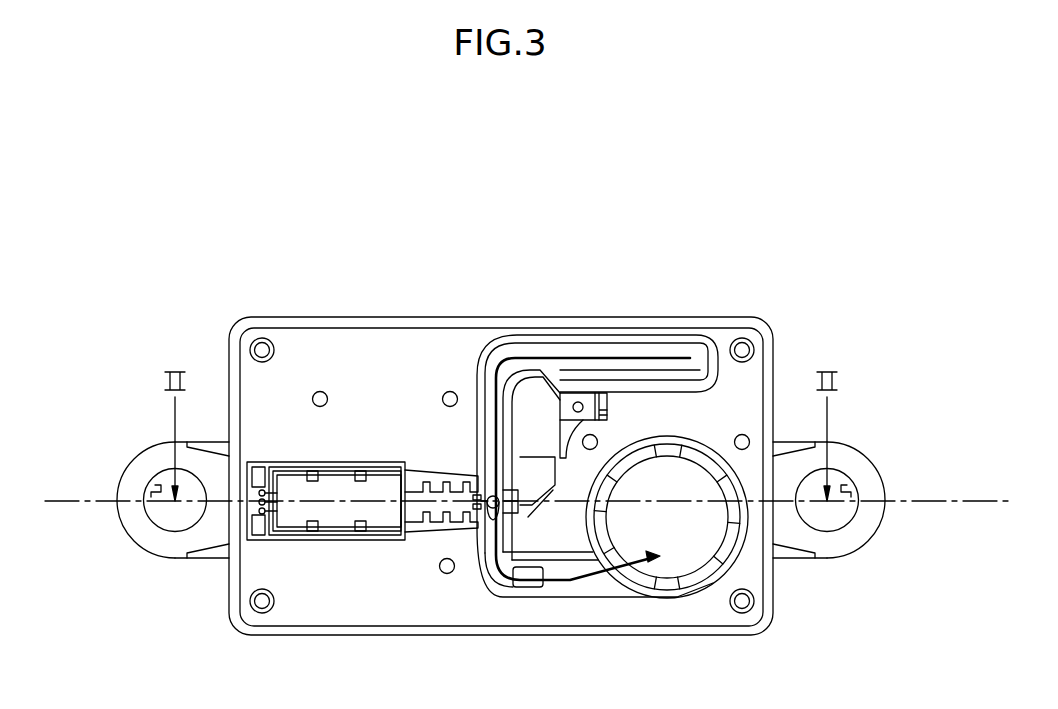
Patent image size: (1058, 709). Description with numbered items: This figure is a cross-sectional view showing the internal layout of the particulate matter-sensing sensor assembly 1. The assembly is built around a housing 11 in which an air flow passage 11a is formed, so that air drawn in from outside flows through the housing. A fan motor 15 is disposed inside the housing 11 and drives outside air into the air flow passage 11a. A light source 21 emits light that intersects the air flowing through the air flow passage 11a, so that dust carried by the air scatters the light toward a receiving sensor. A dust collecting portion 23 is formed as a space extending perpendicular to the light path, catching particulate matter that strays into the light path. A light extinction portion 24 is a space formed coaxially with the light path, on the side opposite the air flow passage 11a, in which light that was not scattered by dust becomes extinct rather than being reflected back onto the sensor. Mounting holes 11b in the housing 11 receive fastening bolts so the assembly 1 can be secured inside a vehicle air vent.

The particulate matter-sensing sensor assembly 1 is at (783, 167).
The housing 11 is at (405, 322).
The air flow passage 11a is at (466, 352).
The mounting hole 11b is at (155, 485).
The fan motor 15 is at (697, 537).
The light source 21 is at (343, 485).
The dust collecting portion 23 is at (412, 520).
The light extinction portion 24 is at (533, 508).